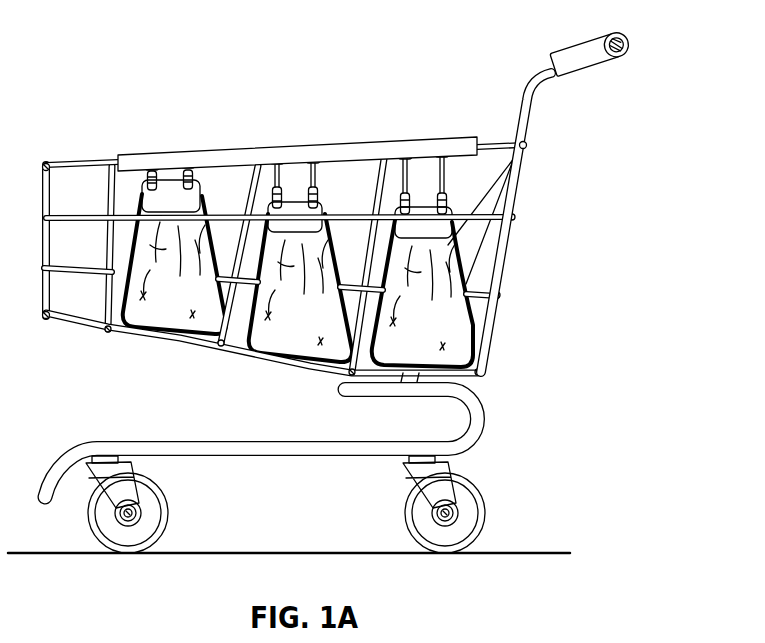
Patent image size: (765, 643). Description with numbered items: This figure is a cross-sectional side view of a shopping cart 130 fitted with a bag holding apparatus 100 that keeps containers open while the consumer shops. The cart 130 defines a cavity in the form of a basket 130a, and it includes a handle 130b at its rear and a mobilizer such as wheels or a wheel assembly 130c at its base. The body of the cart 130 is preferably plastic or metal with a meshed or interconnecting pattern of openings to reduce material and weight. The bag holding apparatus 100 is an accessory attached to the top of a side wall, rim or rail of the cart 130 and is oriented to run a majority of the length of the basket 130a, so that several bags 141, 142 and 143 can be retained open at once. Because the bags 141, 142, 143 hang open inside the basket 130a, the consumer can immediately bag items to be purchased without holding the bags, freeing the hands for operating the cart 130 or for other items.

The bag holding apparatus 100 is at (250, 150).
The shopping cart 130 is at (361, 291).
The basket 130a is at (442, 319).
The handle 130b is at (627, 47).
The wheel assembly 130c is at (579, 514).
The bag 141 is at (136, 232).
The bag 142 is at (351, 252).
The bag 143 is at (410, 205).